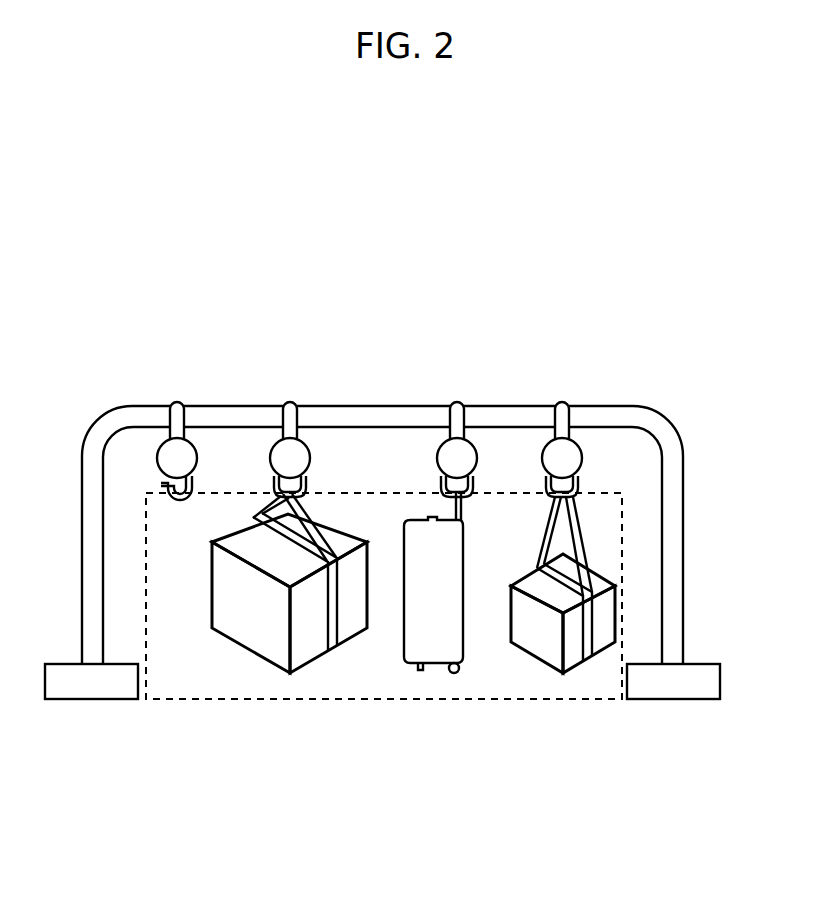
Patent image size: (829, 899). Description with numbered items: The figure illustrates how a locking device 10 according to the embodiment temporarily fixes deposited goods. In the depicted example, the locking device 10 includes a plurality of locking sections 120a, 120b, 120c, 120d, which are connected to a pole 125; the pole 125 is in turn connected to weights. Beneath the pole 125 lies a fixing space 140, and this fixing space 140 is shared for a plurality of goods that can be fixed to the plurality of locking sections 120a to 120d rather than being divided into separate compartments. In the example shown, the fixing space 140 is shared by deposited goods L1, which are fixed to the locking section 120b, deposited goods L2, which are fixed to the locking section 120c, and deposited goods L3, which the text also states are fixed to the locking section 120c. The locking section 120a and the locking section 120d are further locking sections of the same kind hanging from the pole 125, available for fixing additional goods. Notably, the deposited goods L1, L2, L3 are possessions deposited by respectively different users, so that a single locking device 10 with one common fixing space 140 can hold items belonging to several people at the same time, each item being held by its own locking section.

The locking device 10 is at (717, 500).
The pole 125 is at (677, 437).
The locking section 120a is at (182, 393).
The locking section 120b is at (293, 393).
The locking section 120c is at (460, 393).
The locking section 120d is at (565, 393).
The fixing space 140 is at (203, 700).
The deposited goods L1 is at (300, 687).
The deposited goods L2 is at (442, 688).
The deposited goods L3 is at (573, 688).